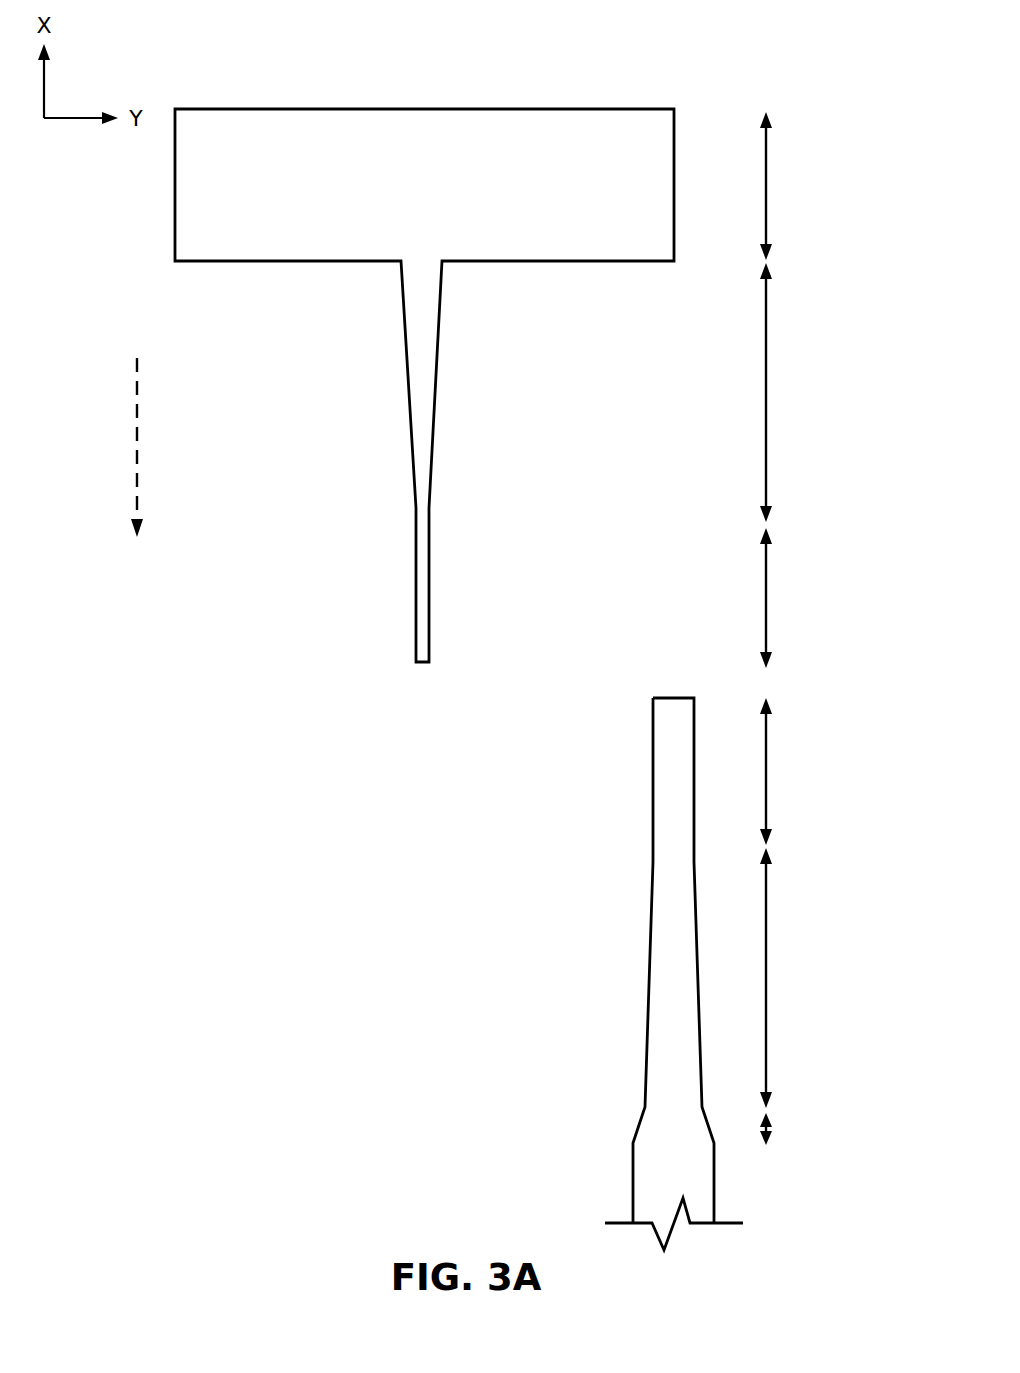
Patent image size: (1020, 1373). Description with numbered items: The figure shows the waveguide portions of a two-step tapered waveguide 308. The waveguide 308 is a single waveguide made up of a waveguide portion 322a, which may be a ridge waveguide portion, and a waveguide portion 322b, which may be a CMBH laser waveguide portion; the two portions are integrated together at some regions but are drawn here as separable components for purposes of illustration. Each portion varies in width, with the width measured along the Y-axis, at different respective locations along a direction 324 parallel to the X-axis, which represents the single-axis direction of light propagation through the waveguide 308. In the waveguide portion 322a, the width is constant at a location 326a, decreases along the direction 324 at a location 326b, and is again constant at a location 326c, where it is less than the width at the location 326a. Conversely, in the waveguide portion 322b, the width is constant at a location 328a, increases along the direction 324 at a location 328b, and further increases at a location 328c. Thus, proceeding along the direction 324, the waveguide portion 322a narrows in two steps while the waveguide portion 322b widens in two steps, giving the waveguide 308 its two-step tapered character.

The waveguide 308 is at (741, 102).
The waveguide portion 322a is at (278, 108).
The waveguide portion 322b is at (653, 735).
The direction 324 is at (137, 418).
The location 326a is at (766, 184).
The location 326b is at (766, 382).
The location 326c is at (766, 597).
The location 328a is at (766, 773).
The location 328b is at (766, 968).
The location 328c is at (766, 1129).